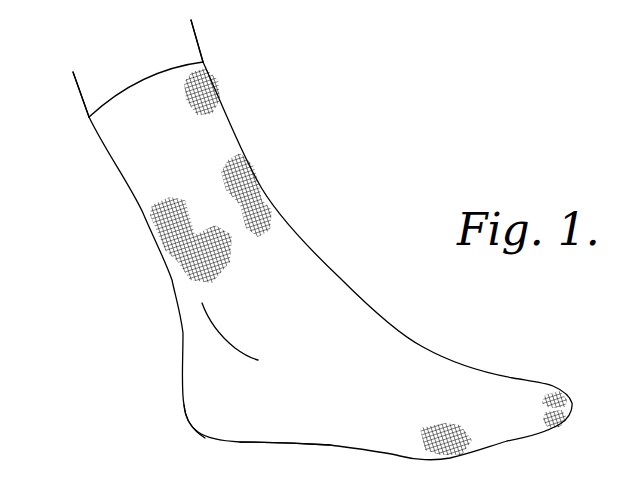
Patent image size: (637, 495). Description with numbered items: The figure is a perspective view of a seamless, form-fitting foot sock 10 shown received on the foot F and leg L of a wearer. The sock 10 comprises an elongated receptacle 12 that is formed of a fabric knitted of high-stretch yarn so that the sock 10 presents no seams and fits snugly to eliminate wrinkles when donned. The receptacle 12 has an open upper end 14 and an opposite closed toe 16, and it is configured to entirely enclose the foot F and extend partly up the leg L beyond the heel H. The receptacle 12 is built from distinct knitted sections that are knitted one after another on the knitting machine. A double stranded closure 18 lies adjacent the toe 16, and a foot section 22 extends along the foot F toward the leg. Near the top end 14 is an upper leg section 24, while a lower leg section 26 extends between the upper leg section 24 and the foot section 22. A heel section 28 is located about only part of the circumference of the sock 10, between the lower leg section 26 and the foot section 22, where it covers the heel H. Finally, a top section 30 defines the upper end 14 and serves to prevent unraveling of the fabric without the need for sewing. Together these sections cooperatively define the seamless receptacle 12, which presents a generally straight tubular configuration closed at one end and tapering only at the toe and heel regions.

The foot sock 10 is at (349, 268).
The receptacle 12 is at (275, 443).
The open upper end 14 is at (206, 61).
The closed toe 16 is at (573, 403).
The double stranded closure 18 is at (563, 423).
The foot section 22 is at (395, 442).
The upper leg section 24 is at (212, 108).
The lower leg section 26 is at (263, 210).
The heel section 28 is at (212, 432).
The top section 30 is at (98, 107).
The leg L is at (198, 42).
The foot F is at (425, 348).
The heel H is at (189, 407).